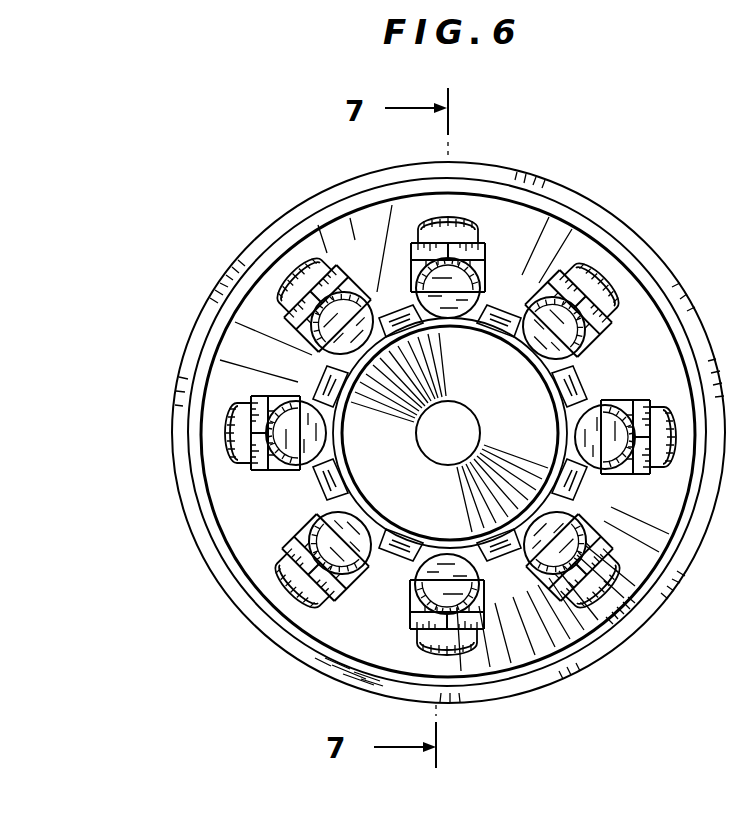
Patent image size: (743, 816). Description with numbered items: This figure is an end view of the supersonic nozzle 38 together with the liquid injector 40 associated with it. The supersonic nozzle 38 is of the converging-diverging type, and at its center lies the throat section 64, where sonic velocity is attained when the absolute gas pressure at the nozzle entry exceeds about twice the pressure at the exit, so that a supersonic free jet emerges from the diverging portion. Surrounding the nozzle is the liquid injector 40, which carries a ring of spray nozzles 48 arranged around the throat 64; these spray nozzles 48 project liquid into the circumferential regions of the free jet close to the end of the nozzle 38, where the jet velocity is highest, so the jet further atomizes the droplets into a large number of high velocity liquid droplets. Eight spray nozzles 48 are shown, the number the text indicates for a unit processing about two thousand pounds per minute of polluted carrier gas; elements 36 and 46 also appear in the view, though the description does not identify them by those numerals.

The rim ring 36 is at (405, 167).
The liquid injector 40 is at (208, 382).
The outer flange 46 is at (207, 575).
The supersonic nozzle 38 is at (352, 424).
The throat section 64 is at (428, 433).
The spray nozzles 48 is at (410, 604).